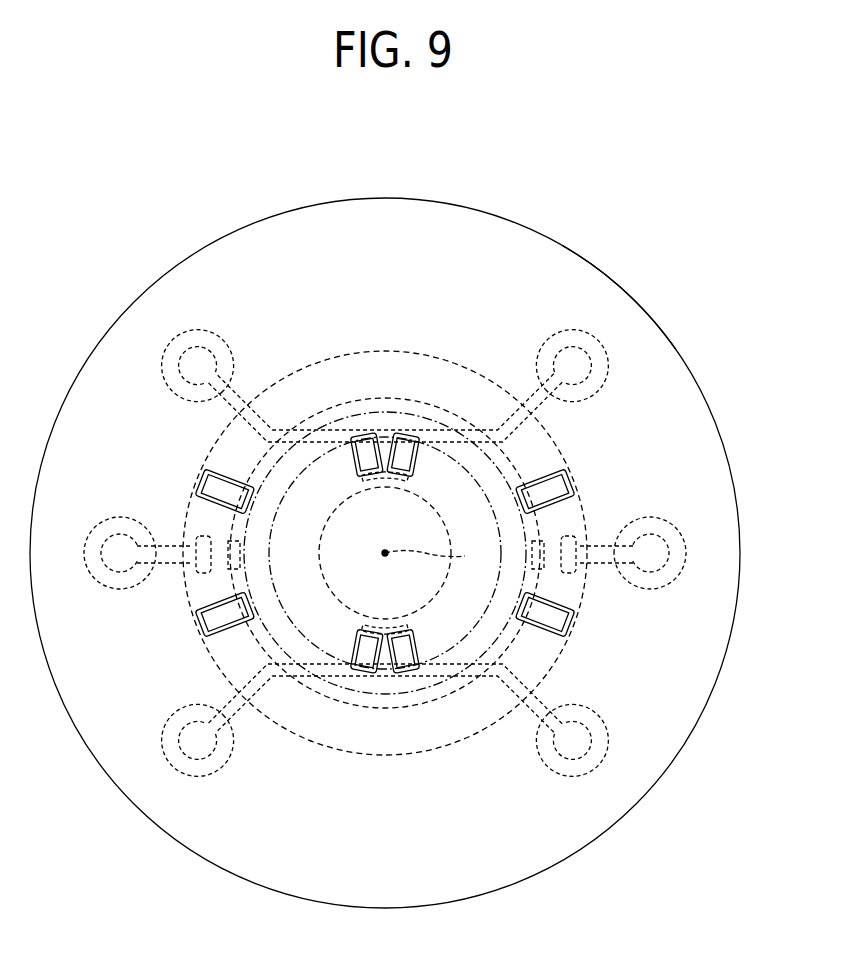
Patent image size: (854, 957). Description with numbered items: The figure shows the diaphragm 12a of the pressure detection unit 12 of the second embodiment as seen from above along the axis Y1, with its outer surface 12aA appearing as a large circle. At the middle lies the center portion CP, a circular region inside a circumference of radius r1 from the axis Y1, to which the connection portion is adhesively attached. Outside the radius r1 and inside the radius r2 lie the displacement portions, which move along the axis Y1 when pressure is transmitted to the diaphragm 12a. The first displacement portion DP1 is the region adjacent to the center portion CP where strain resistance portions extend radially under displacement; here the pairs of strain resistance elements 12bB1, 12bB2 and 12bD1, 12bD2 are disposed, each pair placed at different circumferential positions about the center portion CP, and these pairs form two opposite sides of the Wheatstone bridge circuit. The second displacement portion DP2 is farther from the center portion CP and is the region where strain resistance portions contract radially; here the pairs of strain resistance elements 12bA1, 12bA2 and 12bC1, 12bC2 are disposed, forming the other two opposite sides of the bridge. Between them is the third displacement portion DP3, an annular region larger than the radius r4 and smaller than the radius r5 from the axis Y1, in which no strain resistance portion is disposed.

The stator 12 is at (703, 718).
The diaphragm 12a is at (641, 303).
The base plate surface 12aA is at (249, 258).
The strain resistance element 12bA1 is at (560, 503).
The strain resistance element 12bA2 is at (560, 620).
The strain resistance element 12bB1 is at (358, 432).
The strain resistance element 12bB2 is at (413, 432).
The strain resistance element 12bC1 is at (205, 482).
The strain resistance element 12bC2 is at (208, 600).
The strain resistance element 12bD1 is at (358, 682).
The strain resistance element 12bD2 is at (413, 682).
The first displacement portion DP1 is at (467, 622).
The second displacement portion DP2 is at (463, 728).
The third displacement portion DP3 is at (318, 422).
The radius r1 is at (410, 492).
The radius r2 is at (535, 428).
The radius r4 is at (385, 553).
The radius r5 is at (385, 553).
The axis Y1 is at (442, 553).
The center portion CP is at (385, 553).